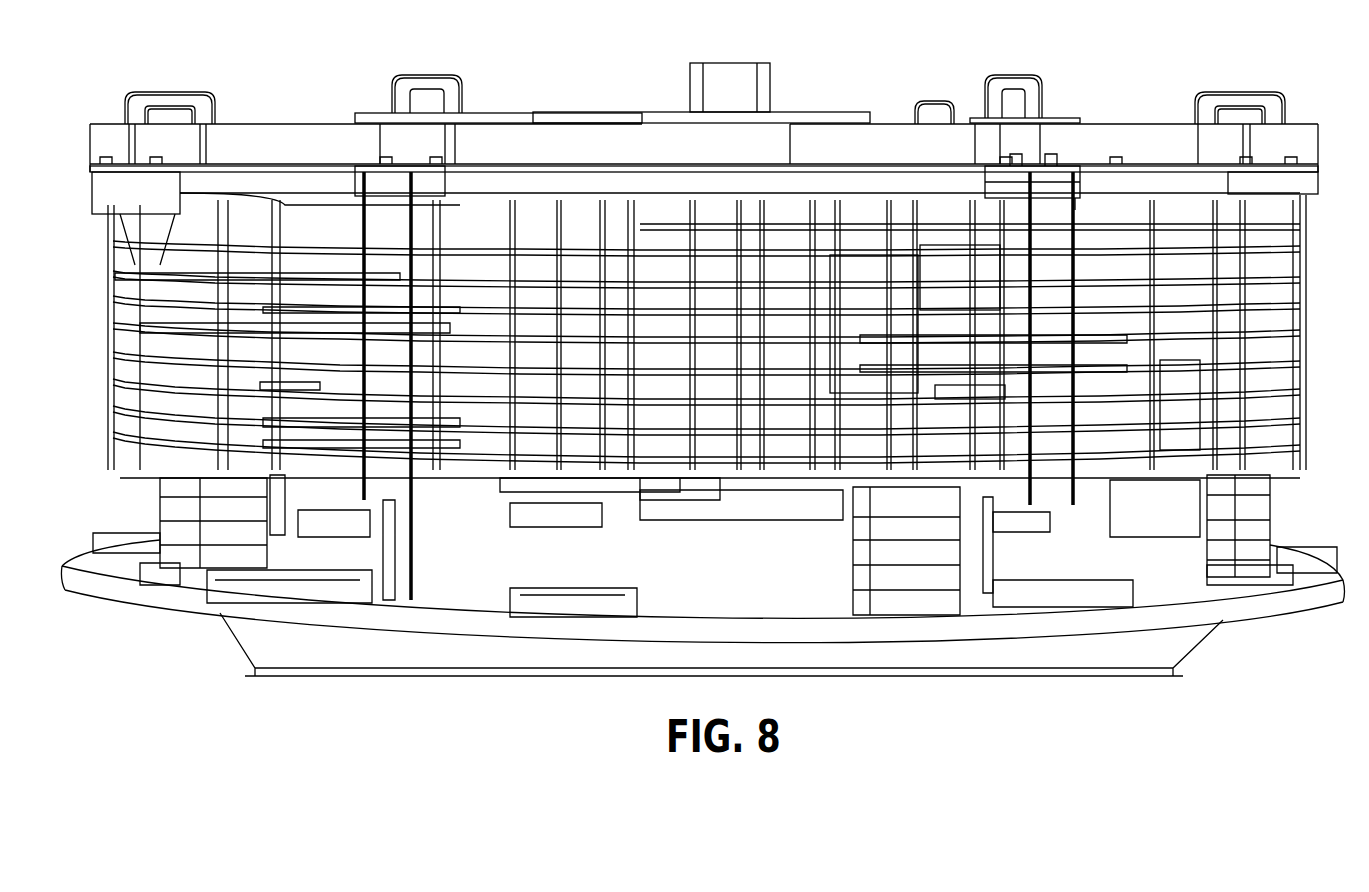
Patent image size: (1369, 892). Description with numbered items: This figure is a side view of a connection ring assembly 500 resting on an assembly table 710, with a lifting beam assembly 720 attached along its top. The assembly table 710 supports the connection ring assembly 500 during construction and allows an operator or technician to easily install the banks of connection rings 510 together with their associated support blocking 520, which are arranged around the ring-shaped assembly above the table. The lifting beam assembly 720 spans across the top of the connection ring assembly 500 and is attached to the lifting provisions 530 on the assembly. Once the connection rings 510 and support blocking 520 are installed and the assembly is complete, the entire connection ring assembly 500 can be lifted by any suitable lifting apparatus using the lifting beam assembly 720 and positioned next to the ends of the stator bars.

The connection ring assembly 500 is at (88, 342).
The connection rings 510 is at (723, 560).
The support blocking 520 is at (1308, 390).
The lifting provisions 530 is at (1133, 90).
The assembly table 710 is at (185, 665).
The lifting beam assembly 720 is at (847, 130).